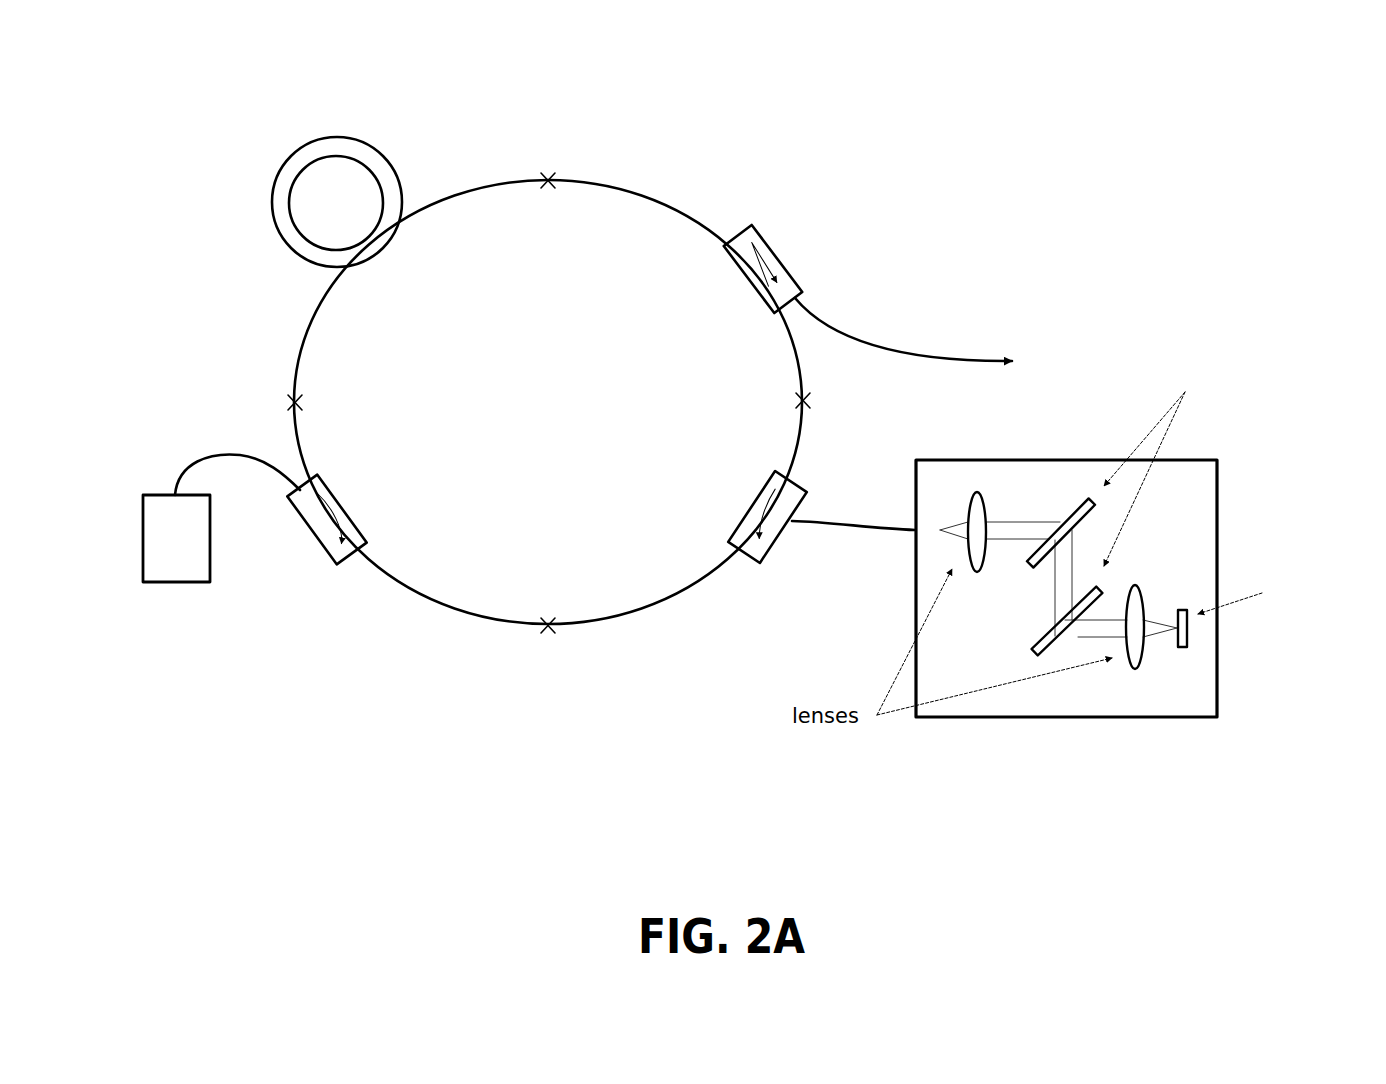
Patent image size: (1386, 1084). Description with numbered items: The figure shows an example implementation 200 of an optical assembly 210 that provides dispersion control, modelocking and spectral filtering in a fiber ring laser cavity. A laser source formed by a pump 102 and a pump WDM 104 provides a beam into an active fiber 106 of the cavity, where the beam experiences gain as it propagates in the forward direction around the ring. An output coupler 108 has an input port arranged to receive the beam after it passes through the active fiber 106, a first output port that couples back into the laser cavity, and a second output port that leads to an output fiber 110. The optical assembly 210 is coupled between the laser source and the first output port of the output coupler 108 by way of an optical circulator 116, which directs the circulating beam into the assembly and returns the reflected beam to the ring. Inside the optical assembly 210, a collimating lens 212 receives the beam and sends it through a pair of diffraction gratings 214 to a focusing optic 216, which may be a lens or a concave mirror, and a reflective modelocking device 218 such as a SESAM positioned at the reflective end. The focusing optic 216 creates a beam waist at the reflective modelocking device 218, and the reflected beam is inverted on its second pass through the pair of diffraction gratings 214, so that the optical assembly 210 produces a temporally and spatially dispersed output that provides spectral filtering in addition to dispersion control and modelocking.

The example implementation 200 is at (210, 65).
The pump 102 is at (172, 645).
The pump WDM 104 is at (392, 460).
The active fiber 106 is at (272, 224).
The output coupler 108 is at (892, 244).
The output fiber 110 is at (1068, 340).
The optical circulator 116 is at (686, 468).
The optical assembly 210 is at (915, 589).
The collimating lens 212 is at (977, 492).
The pair of diffraction gratings 214 is at (1270, 368).
The focusing optic 216 is at (1139, 594).
The reflective modelocking device 218 is at (1325, 573).